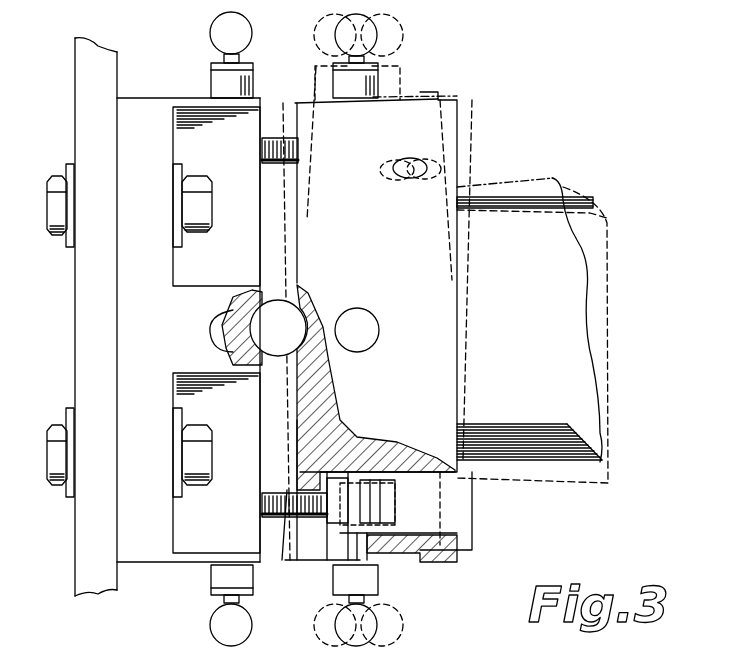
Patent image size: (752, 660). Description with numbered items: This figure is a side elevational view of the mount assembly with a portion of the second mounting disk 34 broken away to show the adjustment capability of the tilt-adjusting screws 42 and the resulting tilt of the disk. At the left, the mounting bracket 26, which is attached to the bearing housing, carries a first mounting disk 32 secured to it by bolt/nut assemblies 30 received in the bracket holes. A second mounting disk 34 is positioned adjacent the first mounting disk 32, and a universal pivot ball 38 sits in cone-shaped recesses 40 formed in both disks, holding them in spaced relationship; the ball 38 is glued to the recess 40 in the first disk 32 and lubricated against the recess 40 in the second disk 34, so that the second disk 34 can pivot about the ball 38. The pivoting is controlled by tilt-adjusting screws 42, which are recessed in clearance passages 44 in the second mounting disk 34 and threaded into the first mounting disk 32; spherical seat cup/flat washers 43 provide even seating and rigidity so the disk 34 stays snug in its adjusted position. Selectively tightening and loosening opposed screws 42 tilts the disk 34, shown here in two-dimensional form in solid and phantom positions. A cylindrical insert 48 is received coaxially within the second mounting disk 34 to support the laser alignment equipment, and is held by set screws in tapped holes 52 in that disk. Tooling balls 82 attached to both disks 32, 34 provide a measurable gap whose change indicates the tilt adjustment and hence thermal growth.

The mounting bracket 26 is at (92, 336).
The bolt/nut assembly 30 is at (192, 197).
The first mounting disk 32 is at (163, 120).
The second mounting disk 34 is at (392, 127).
The universal pivot ball 38 is at (288, 318).
The cone-shaped recess 40 is at (300, 357).
The tilt-adjusting screw 42 is at (372, 518).
The spherical seat cup/flat washer 43 is at (349, 534).
The passage 44 is at (420, 537).
The cylindrical insert 48 is at (517, 207).
The tapped hole 52 is at (412, 165).
The tooling ball 82 is at (354, 36).